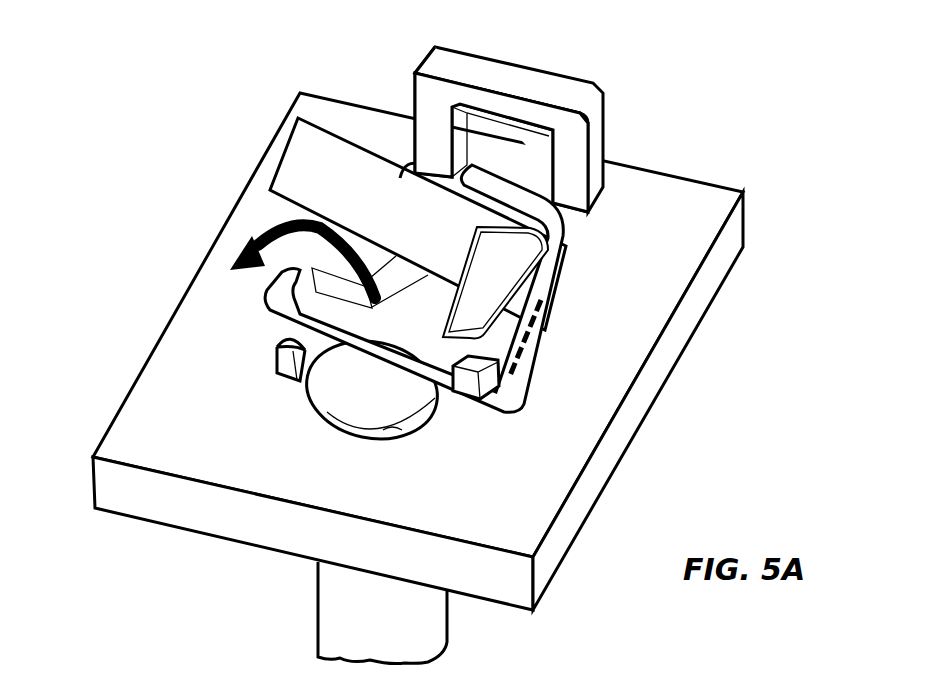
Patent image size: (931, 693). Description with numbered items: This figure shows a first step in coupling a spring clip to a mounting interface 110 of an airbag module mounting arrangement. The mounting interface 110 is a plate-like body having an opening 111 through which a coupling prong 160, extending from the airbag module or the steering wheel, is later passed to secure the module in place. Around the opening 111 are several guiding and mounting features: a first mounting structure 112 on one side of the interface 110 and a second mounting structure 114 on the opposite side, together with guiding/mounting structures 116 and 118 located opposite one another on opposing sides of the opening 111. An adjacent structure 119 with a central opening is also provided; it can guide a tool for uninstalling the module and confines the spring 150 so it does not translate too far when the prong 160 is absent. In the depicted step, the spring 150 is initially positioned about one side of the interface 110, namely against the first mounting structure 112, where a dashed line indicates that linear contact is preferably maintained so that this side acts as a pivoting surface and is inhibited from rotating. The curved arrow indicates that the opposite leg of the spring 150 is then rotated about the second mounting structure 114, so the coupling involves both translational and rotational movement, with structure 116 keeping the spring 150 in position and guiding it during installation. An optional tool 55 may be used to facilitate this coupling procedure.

The mounting interface 110 is at (246, 104).
The tool 55 is at (293, 165).
The adjacent structure 119 is at (577, 137).
The second mounting structure 114 is at (330, 265).
The guiding/mounting structure 118 is at (283, 357).
The first mounting structure 112 is at (523, 273).
The spring 150 is at (552, 321).
The guiding/mounting structure 116 is at (480, 375).
The opening 111 is at (395, 428).
The coupling prong 160 is at (328, 603).